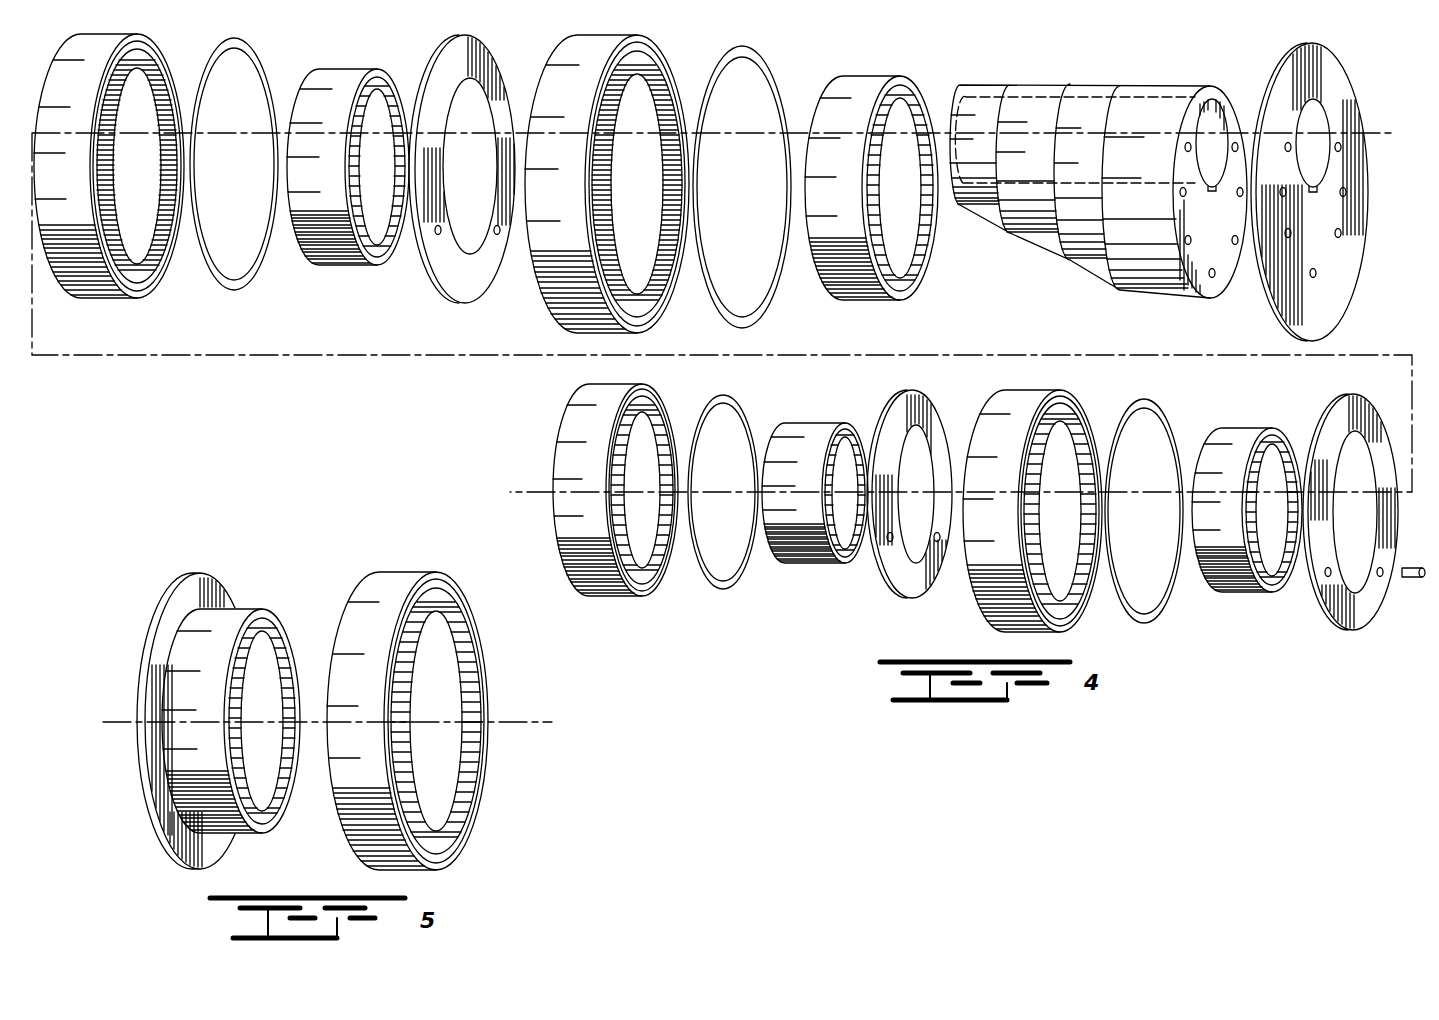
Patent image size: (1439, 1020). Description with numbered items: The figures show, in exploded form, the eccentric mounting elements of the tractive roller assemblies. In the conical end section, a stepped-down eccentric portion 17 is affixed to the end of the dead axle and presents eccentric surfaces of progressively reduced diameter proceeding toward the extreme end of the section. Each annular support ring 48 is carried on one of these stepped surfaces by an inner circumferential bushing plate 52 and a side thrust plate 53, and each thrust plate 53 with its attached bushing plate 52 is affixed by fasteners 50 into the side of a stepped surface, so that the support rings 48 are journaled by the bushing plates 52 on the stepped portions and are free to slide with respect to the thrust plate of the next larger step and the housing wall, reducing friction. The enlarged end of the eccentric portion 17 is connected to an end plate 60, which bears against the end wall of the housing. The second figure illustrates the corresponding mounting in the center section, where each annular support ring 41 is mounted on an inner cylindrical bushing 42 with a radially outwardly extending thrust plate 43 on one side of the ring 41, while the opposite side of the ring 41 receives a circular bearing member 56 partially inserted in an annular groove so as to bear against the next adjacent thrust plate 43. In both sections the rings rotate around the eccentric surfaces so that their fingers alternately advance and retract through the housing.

In FIG. 4, the stepped-down eccentric portion 17 is at (1033, 233).
In FIG. 5, the annular support ring 41 is at (465, 836).
In FIG. 5, the inner cylindrical bushing 42 is at (250, 831).
In FIG. 5, the thrust plate 43 is at (222, 592).
In FIG. 4, the annular support ring 48 is at (114, 300).
In FIG. 4, the fastener 50 is at (1405, 578).
In FIG. 4, the inner circumferential bushing plate 52 is at (319, 264).
In FIG. 4, the side thrust plate 53 is at (440, 289).
In FIG. 4, the circular bearing member 56 is at (236, 290).
In FIG. 4, the end plate 60 is at (1342, 303).